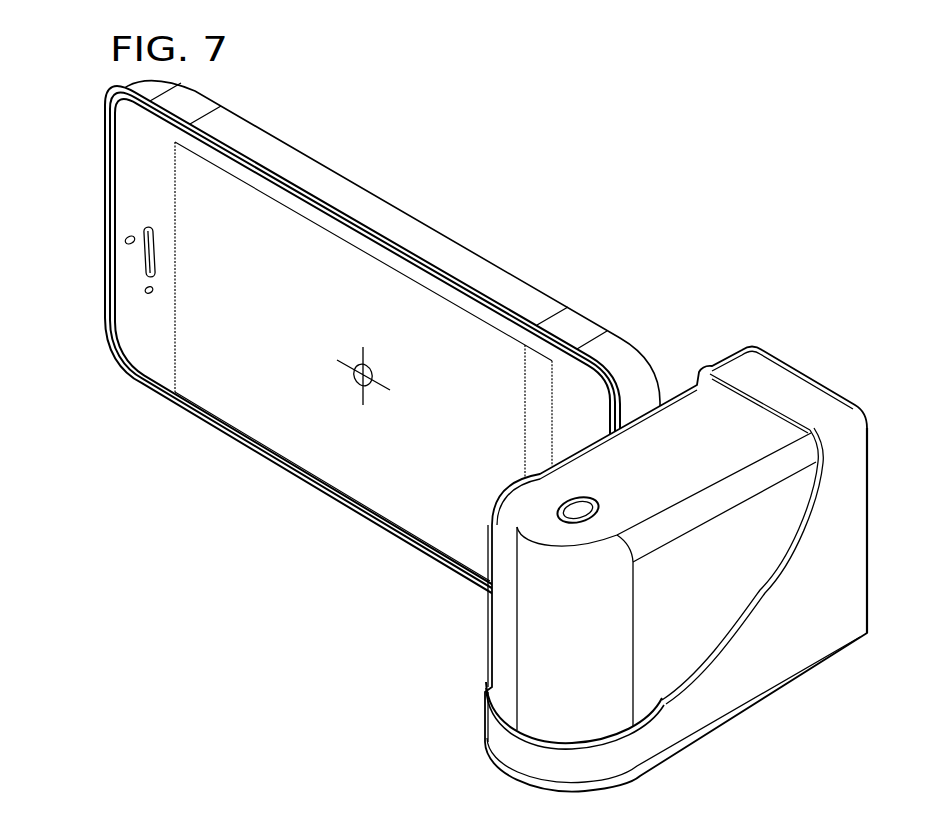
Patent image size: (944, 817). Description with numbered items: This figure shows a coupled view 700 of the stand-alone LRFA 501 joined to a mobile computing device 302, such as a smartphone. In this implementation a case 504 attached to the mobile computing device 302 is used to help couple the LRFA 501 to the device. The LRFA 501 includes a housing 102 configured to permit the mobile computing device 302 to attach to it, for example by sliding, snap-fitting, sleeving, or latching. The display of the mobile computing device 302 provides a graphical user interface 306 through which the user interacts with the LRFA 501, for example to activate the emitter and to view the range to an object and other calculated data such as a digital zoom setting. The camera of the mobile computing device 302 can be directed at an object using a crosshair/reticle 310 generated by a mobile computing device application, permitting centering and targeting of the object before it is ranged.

The coupled view 700 is at (446, 436).
The mobile computing device 302 is at (343, 370).
The case 504 is at (383, 213).
The graphical user interface 306 is at (228, 402).
The crosshair/reticle 310 is at (368, 363).
The housing 102 is at (502, 627).
The stand-alone LRFA 501 is at (773, 663).